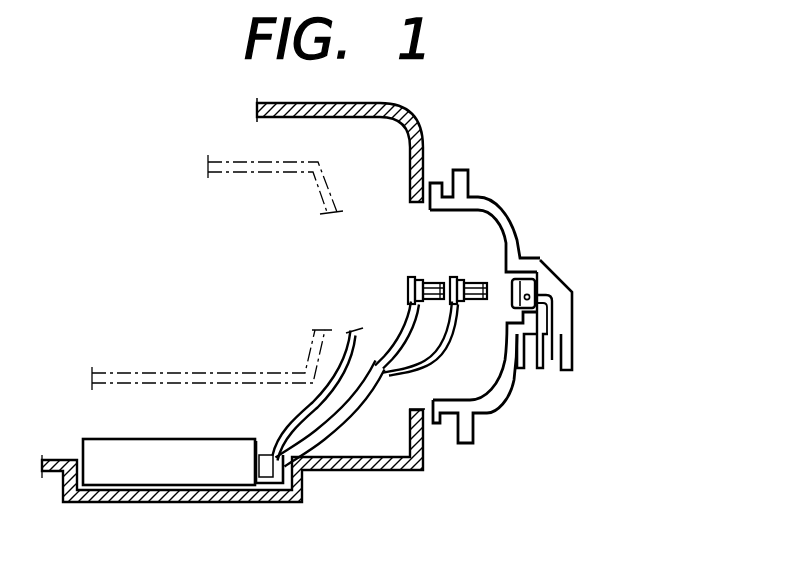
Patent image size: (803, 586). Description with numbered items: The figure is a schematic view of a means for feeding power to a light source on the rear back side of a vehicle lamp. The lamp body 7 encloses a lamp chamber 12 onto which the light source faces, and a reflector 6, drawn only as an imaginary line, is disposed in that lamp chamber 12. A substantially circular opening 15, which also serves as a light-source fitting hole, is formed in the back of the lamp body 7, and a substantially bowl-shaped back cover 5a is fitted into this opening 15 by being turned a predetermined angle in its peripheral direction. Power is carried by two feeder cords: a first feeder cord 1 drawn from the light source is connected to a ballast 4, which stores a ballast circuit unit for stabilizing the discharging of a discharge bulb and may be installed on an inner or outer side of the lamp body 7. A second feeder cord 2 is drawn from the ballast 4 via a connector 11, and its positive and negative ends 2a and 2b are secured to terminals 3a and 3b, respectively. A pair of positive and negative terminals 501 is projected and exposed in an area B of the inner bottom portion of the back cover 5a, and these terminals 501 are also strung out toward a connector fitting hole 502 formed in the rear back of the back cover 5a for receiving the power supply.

The first feeder cord 1 is at (283, 414).
The second feeder cord 2 is at (350, 423).
The positive end 2a is at (406, 333).
The negative end 2b is at (452, 340).
The terminal 3a is at (411, 278).
The terminal 3b is at (456, 279).
The ballast 4 is at (182, 474).
The back cover 5a is at (510, 212).
The reflector 6 is at (262, 170).
The lamp body 7 is at (104, 501).
The connector 11 is at (267, 490).
The lamp chamber 12 is at (181, 269).
The opening 15 is at (425, 224).
The positive and negative terminals 501 is at (538, 270).
The connector fitting hole 502 is at (549, 358).
The area B is at (503, 281).